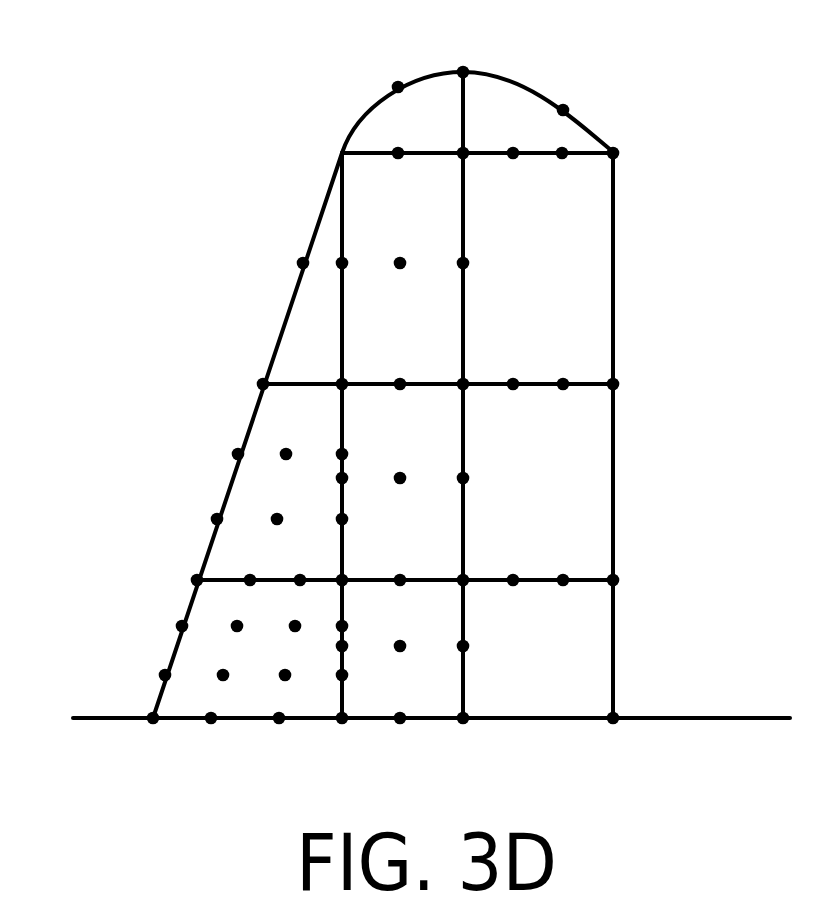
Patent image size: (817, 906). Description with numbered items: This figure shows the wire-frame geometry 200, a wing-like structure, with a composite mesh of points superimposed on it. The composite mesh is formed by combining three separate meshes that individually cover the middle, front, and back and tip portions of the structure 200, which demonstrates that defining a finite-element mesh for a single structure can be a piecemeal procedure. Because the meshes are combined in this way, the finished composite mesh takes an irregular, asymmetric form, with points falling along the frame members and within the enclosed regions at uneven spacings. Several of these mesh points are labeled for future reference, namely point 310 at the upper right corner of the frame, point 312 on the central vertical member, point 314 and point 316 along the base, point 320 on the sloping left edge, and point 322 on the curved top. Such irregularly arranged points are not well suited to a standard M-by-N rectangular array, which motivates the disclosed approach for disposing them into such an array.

The wire-frame geometry 200 is at (207, 172).
The mesh point 310 is at (617, 143).
The mesh point 312 is at (468, 470).
The mesh point 314 is at (620, 710).
The mesh point 316 is at (463, 728).
The mesh point 320 is at (195, 575).
The mesh point 322 is at (392, 78).